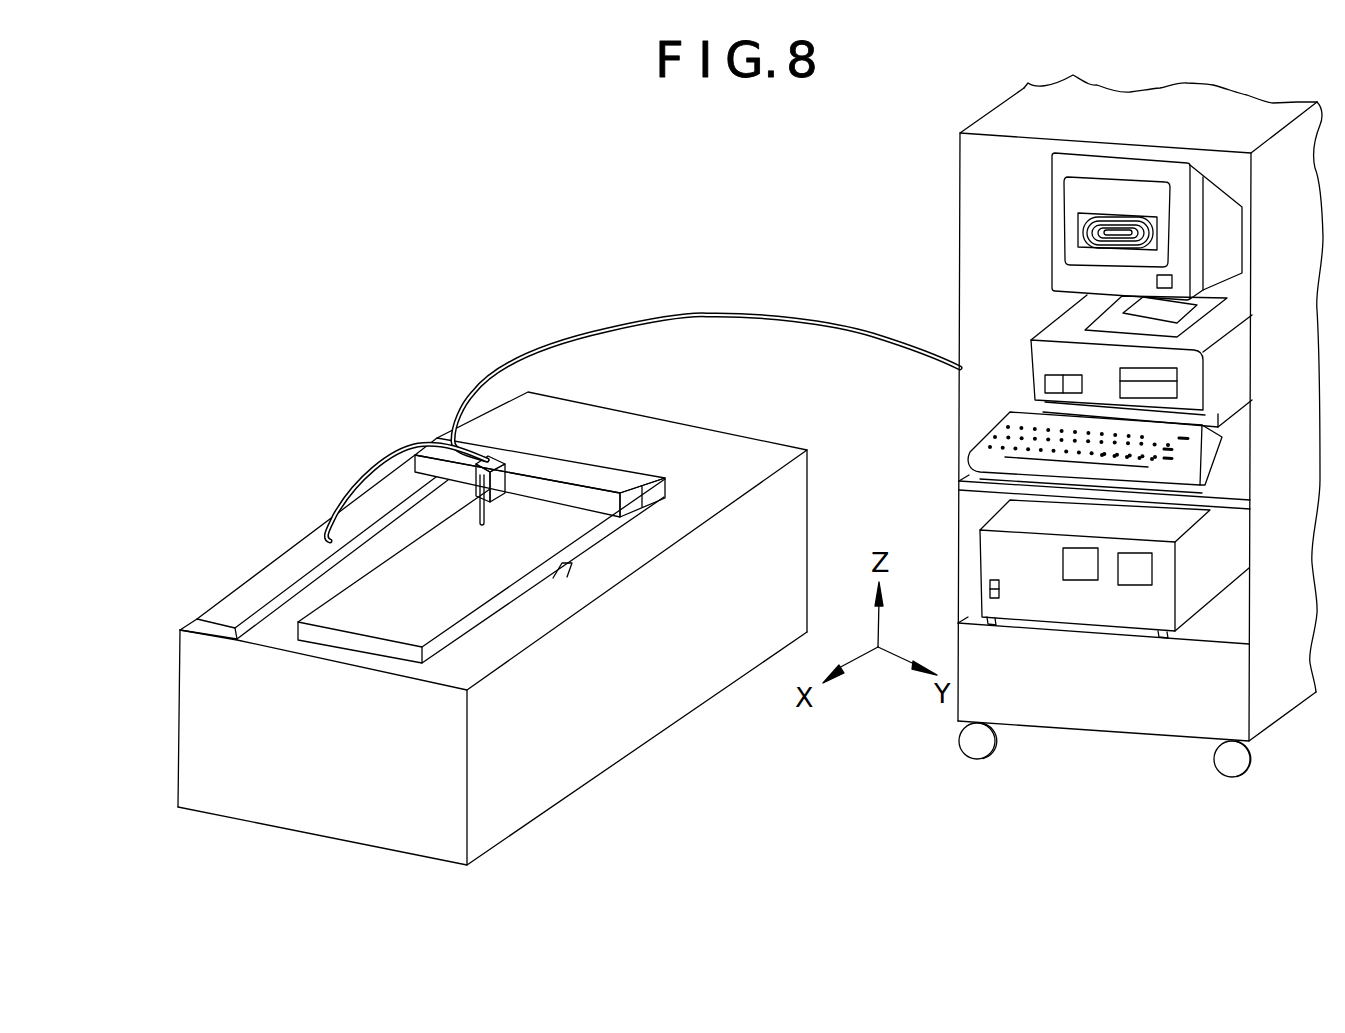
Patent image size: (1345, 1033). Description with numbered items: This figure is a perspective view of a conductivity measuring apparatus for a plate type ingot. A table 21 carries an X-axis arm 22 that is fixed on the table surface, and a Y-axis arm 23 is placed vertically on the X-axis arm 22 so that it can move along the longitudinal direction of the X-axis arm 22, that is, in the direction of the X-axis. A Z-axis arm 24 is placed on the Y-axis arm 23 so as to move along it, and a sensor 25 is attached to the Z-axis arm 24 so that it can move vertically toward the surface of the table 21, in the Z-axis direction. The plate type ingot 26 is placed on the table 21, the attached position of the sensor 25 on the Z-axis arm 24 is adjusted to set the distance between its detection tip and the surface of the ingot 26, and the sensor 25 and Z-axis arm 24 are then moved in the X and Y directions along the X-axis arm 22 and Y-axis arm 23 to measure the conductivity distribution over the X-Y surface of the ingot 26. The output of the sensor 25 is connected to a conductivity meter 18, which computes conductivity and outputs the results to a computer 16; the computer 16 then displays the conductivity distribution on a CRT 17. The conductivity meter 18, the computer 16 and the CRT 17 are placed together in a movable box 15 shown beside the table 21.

The movable box 15 is at (1291, 688).
The computer 16 is at (1047, 367).
The CRT 17 is at (1090, 197).
The conductivity meter 18 is at (1049, 598).
The table 21 is at (587, 767).
The X-axis arm 22 is at (263, 580).
The Y-axis arm 23 is at (597, 480).
The Z-axis arm 24 is at (500, 445).
The sensor 25 is at (493, 513).
The plate type ingot 26 is at (433, 613).